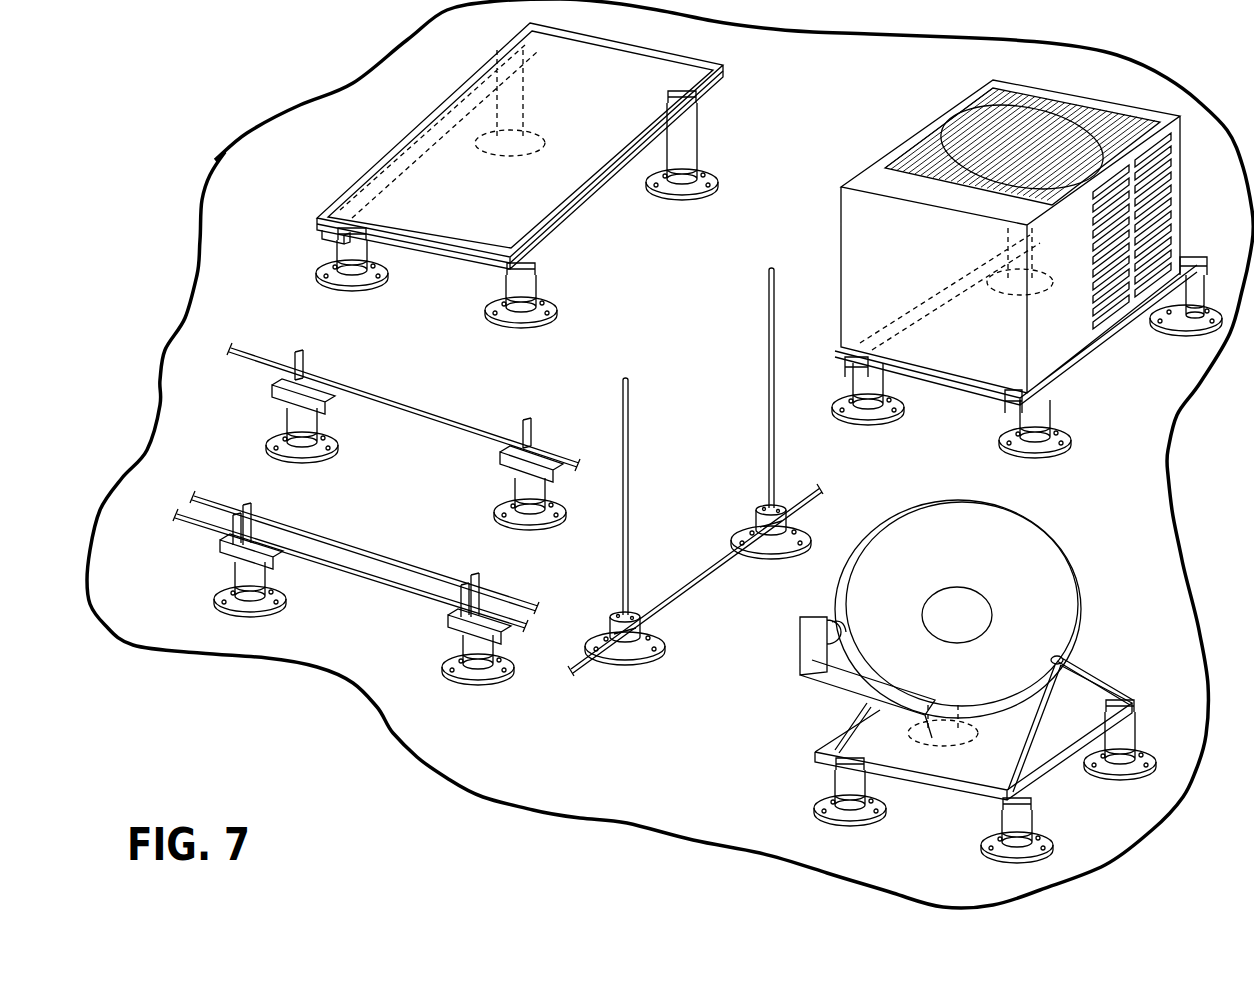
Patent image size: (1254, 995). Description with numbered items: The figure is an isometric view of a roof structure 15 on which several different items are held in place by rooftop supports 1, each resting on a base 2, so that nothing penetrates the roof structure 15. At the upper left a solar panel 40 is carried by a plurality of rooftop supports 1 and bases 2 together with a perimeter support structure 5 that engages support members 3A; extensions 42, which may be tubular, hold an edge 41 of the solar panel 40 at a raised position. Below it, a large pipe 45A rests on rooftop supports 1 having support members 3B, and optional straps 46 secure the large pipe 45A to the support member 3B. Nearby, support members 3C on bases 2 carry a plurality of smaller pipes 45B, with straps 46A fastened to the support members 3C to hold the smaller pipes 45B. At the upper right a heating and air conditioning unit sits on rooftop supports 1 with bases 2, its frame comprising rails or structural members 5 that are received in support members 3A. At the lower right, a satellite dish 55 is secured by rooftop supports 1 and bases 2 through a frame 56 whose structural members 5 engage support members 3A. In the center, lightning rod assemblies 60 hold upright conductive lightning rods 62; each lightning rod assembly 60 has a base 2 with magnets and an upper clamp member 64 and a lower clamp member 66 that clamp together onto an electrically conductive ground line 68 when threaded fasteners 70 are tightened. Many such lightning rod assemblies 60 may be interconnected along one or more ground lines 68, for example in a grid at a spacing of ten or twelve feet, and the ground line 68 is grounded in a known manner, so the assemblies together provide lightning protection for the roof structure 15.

The rooftop support 1 is at (690, 484).
The base 2 is at (340, 290).
The support member 3A is at (362, 268).
The support member 3B is at (280, 420).
The support member 3C is at (232, 578).
The perimeter support structure 5 is at (395, 146).
The roof structure 15 is at (715, 501).
The solar panel 40 is at (485, 147).
The edge 41 is at (330, 200).
The extension 42 is at (335, 250).
The large pipe 45A is at (403, 391).
The smaller pipes 45B is at (352, 547).
The strap 46 is at (293, 373).
The strap 46A is at (248, 525).
The satellite dish 55 is at (975, 650).
The frame 56 is at (1080, 664).
The lightning rod assembly 60 is at (717, 548).
The lightning rod 62 is at (628, 452).
The upper clamp member 64 is at (756, 512).
The lower clamp member 66 is at (765, 535).
The ground line 68 is at (585, 675).
The threaded fastener 70 is at (792, 487).